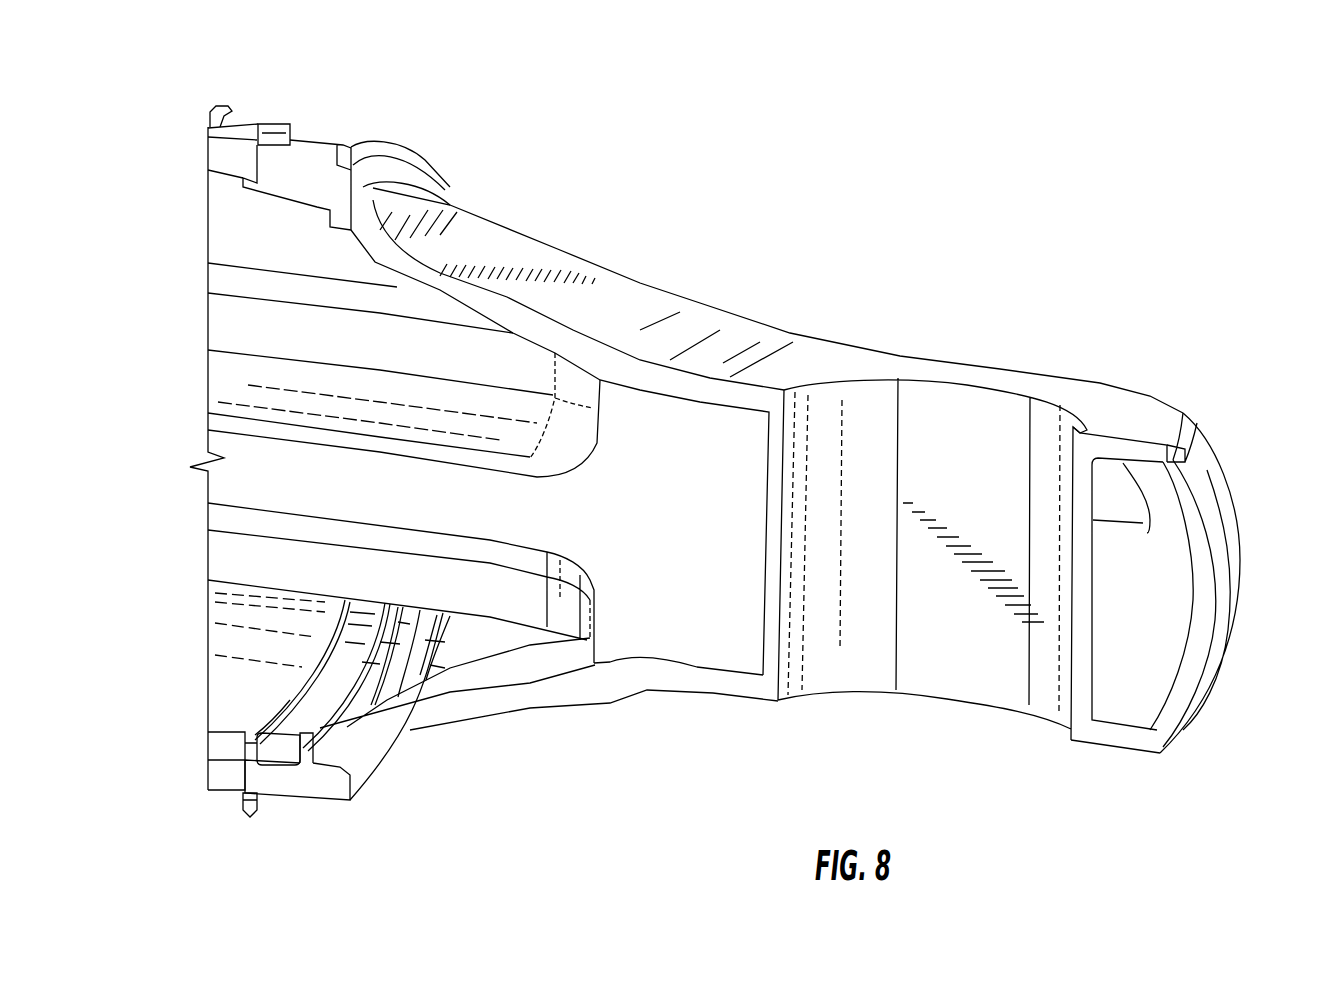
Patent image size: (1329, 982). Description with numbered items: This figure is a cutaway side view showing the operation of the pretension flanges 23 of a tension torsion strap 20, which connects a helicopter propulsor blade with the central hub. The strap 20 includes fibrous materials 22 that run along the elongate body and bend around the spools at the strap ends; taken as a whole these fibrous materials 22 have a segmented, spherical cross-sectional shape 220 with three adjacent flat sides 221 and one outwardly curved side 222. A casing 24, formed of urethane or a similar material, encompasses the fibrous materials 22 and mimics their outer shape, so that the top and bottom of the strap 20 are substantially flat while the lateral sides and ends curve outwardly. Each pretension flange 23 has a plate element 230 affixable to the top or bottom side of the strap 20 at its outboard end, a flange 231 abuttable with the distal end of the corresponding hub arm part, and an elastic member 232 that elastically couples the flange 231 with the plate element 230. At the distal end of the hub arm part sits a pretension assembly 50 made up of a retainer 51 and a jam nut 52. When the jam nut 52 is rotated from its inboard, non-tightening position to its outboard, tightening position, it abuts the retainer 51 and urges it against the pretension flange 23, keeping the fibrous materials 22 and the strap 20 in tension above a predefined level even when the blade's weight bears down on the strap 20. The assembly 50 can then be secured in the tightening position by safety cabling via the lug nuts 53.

The tension torsion strap 20 is at (488, 538).
The fibrous materials 22 is at (1123, 687).
The pretension flanges 23 is at (592, 682).
The casing 24 is at (1197, 452).
The pretension assemblies 50 is at (247, 823).
The retainer 51 is at (297, 780).
The jam nut 52 is at (210, 777).
The lug nuts 53 is at (280, 127).
The segmented, spherical cross-sectional shape 220 is at (1145, 640).
The flat sides 221 is at (1149, 535).
The outwardly curved side 222 is at (1193, 563).
The plate element 230 is at (947, 370).
The flange 231 is at (410, 202).
The elastic member 232 is at (637, 303).